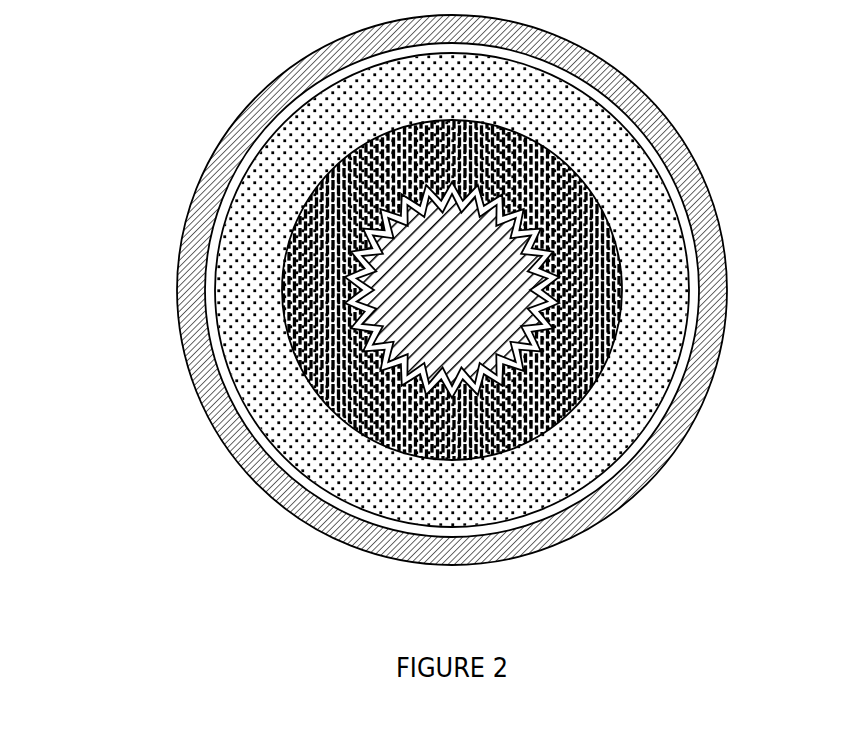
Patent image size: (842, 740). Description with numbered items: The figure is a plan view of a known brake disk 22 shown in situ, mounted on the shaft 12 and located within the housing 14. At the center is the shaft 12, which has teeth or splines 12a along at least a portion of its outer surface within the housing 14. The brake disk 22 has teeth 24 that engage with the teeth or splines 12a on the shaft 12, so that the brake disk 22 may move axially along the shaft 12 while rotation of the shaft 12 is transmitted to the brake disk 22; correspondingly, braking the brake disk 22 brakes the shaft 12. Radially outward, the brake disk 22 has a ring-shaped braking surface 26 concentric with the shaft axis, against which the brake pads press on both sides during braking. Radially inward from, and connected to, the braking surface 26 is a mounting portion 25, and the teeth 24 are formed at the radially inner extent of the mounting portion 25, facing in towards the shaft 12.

The shaft 12 is at (388, 340).
The teeth or splines 12a is at (520, 360).
The housing 14 is at (203, 400).
The brake disk 22 is at (578, 130).
The teeth 24 is at (523, 223).
The mounting portion 25 is at (580, 248).
The braking surface 26 is at (647, 333).